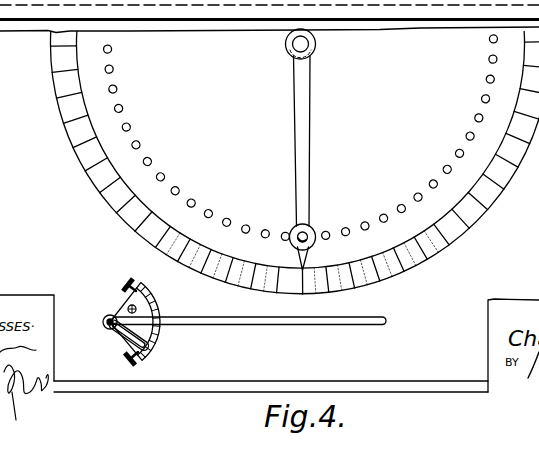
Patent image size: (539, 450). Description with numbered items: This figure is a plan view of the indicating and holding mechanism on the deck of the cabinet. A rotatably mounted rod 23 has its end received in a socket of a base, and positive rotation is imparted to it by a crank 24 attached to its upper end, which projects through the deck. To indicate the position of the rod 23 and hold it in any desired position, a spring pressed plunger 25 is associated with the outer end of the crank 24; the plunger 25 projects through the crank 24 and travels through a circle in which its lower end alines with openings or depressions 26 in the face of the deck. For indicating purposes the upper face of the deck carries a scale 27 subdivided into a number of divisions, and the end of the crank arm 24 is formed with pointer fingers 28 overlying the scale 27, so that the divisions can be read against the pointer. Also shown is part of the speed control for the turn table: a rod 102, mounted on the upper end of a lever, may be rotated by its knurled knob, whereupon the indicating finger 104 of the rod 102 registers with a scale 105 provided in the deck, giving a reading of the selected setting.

The rotatably mounted rod 23 is at (302, 44).
The crank 24 is at (303, 136).
The spring pressed plunger 25 is at (305, 233).
The openings or depressions 26 is at (431, 182).
The scale 27 is at (413, 258).
The pointer fingers 28 is at (300, 262).
The rod 102 is at (108, 327).
The indicating finger 104 is at (152, 349).
The scale 105 is at (145, 309).